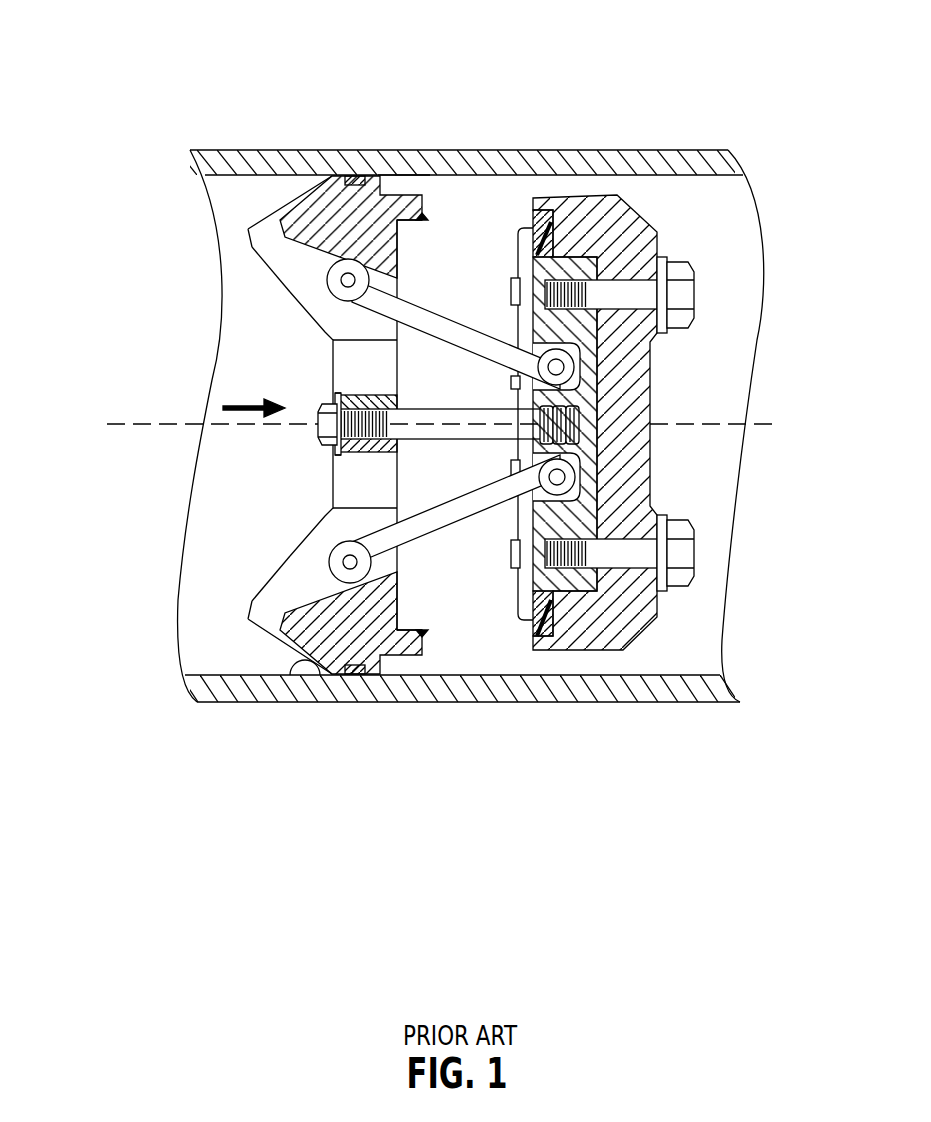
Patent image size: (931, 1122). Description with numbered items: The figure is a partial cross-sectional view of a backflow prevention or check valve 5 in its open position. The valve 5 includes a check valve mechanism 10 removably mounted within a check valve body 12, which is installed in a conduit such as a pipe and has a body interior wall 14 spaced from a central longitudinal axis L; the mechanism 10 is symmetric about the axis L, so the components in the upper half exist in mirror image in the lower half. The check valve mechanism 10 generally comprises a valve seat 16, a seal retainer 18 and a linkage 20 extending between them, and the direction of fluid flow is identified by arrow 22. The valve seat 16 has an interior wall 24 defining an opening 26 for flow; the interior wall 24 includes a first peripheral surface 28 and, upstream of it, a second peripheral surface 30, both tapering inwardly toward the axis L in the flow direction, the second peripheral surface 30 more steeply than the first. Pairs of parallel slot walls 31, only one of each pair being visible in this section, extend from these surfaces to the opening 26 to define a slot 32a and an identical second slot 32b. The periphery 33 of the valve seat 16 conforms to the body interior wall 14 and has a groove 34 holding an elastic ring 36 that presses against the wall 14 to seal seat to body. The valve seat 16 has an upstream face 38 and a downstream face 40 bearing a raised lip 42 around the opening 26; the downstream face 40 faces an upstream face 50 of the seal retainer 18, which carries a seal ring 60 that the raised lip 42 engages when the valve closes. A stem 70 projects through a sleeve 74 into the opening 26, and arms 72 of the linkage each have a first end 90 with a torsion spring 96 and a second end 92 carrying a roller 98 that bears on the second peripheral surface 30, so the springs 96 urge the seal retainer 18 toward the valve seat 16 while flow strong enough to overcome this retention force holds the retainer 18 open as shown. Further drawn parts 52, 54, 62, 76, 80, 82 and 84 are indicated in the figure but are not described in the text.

The backflow prevention valve 5 is at (268, 130).
The check valve mechanism 10 is at (263, 493).
The check valve body 12 is at (412, 175).
The body interior wall 14 is at (320, 678).
The valve seat 16 is at (290, 195).
The seal retainer 18 is at (645, 227).
The linkage 20 is at (445, 309).
The arrow 22 is at (245, 402).
The interior wall 24 is at (248, 230).
The opening 26 is at (307, 370).
The first peripheral surface 28 is at (263, 243).
The second peripheral surface 30 is at (243, 222).
The slot walls 31 is at (252, 247).
The slot 32a is at (308, 279).
The second slot 32b is at (317, 590).
The periphery 33 is at (395, 175).
The groove 34 is at (350, 178).
The elastic ring 36 is at (358, 176).
The upstream face 38 is at (283, 538).
The downstream face 40 is at (428, 222).
The raised lip 42 is at (418, 198).
The upstream face 50 is at (515, 243).
The hub body 52 is at (652, 403).
The retainer block 54 is at (570, 218).
The seal ring 60 is at (530, 218).
The flange plate 62 is at (525, 274).
The stem 70 is at (447, 437).
The arms 72 is at (468, 330).
The sleeve 74 is at (375, 402).
The disc hub 76 is at (340, 343).
The bolt head 80 is at (292, 435).
The washer 82 is at (335, 447).
The washer 84 is at (338, 455).
The first end 90 is at (545, 377).
The second end 92 is at (370, 280).
The torsion spring 96 is at (563, 362).
The rollers 98 is at (399, 238).
The central longitudinal axis L is at (130, 425).